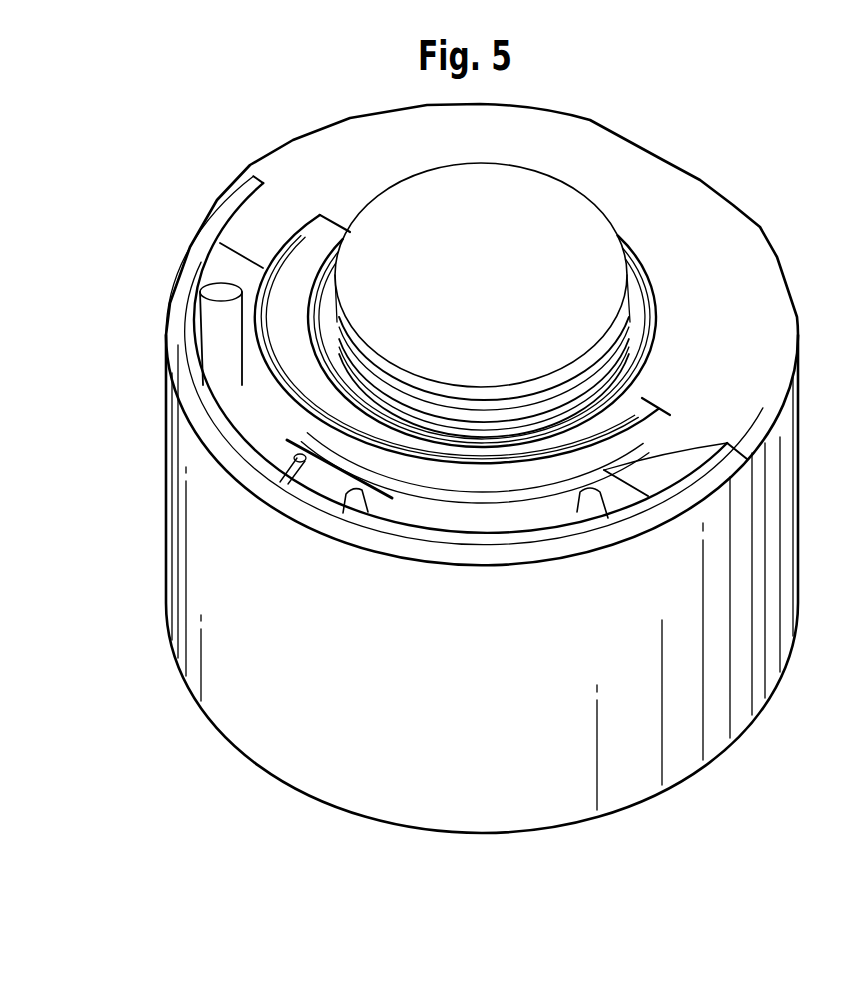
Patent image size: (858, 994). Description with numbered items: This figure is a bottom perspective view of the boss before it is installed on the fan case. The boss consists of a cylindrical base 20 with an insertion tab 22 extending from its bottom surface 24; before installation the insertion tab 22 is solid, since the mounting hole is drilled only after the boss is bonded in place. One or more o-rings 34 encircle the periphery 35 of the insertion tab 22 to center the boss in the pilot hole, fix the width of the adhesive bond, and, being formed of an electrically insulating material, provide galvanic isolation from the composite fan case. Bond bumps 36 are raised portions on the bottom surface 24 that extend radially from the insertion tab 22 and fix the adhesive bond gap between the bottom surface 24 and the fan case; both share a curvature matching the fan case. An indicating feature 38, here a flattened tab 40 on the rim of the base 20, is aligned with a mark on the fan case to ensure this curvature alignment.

The base 20 is at (773, 488).
The insertion tab 22 is at (380, 223).
The bottom surface 24 is at (723, 392).
The o-ring 34 is at (623, 362).
The periphery 35 is at (337, 347).
The bond bumps 36 is at (231, 270).
The indicating feature 38 is at (663, 162).
The flattened tab 40 is at (700, 181).